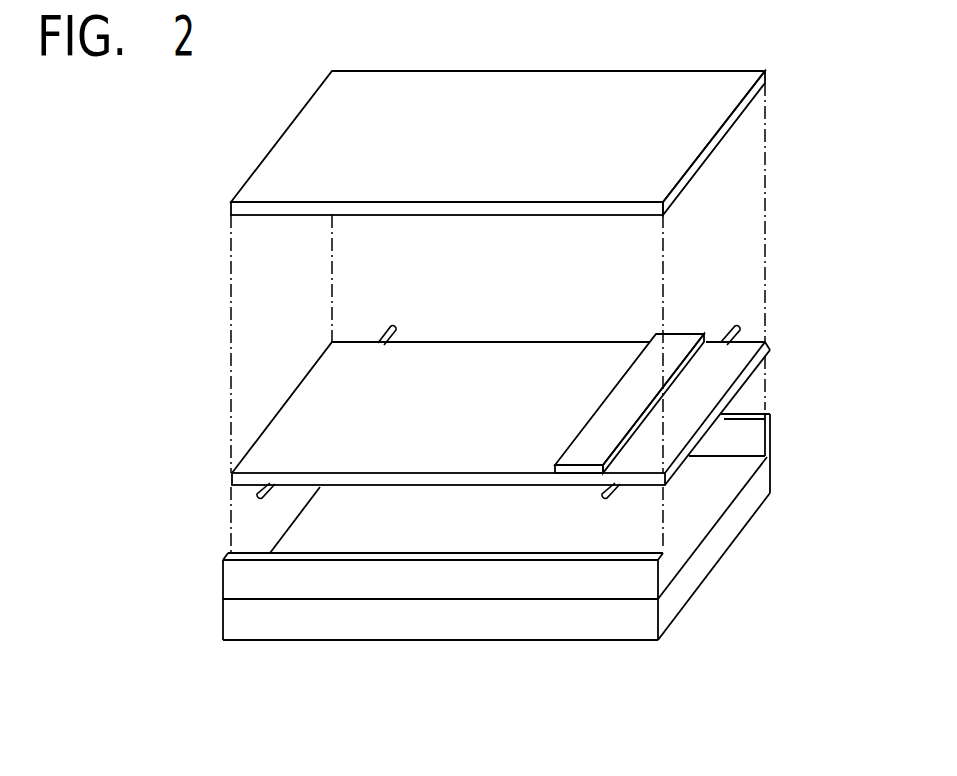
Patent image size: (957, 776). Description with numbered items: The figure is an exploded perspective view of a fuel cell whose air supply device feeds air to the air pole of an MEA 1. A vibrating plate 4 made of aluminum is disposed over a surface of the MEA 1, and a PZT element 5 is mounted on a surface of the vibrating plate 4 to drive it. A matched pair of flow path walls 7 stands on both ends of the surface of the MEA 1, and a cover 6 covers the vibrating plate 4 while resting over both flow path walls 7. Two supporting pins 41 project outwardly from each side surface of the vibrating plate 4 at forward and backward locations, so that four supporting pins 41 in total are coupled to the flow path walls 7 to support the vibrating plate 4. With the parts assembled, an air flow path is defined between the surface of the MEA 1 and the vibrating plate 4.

The MEA 1 is at (495, 633).
The vibrating plate 4 is at (487, 362).
The supporting pins 41 is at (378, 336).
The PZT element 5 is at (683, 333).
The cover 6 is at (529, 80).
The flow path walls 7 is at (393, 580).